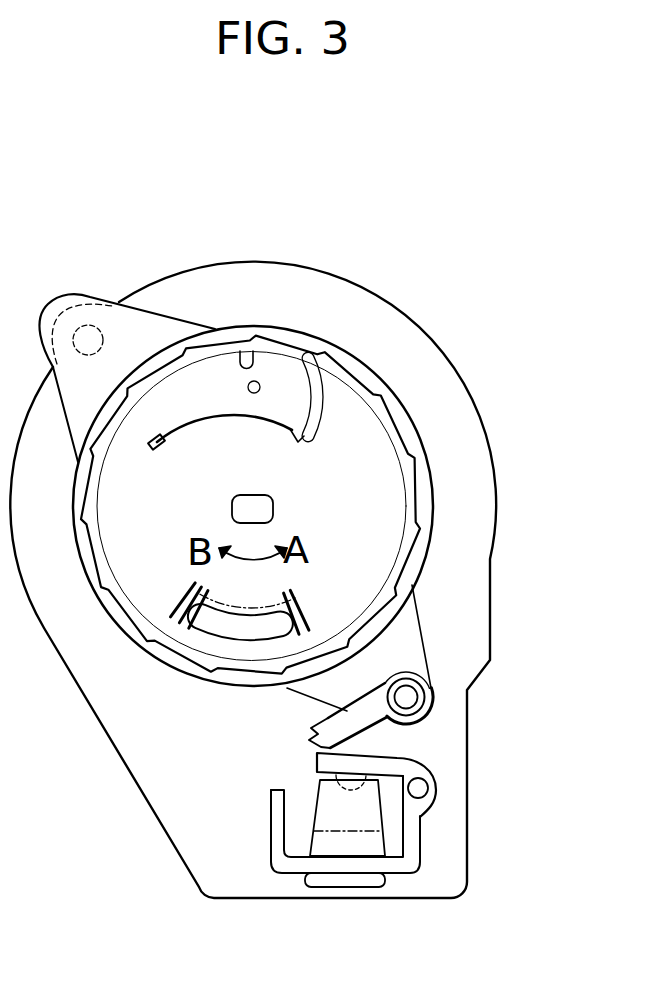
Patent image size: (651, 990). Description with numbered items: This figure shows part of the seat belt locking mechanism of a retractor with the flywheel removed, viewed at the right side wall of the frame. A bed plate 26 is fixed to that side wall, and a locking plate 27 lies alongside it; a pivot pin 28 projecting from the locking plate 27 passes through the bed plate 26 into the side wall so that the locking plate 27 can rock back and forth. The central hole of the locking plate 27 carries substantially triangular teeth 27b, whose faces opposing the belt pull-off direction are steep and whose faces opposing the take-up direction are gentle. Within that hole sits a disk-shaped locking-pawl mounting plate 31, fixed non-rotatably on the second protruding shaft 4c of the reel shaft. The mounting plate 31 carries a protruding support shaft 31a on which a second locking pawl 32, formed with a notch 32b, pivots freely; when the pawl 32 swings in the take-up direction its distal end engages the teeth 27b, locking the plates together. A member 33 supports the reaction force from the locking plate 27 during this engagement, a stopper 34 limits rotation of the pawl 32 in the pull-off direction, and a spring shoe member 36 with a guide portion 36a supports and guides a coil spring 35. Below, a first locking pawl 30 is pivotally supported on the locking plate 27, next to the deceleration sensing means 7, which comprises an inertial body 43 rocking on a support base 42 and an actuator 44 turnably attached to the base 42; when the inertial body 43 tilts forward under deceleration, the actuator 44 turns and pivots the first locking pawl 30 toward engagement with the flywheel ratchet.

The bed plate 26 is at (397, 320).
The locking plate 27 is at (105, 310).
The pivot pin 28 is at (65, 318).
The teeth 27b is at (108, 597).
The locking-pawl mounting plate 31 is at (390, 508).
The protruding support shaft 31a is at (254, 393).
The second locking pawl 32 is at (216, 397).
The notch 32b is at (246, 358).
The member 33 is at (318, 412).
The stopper 34 is at (163, 450).
The second protruding shaft 4c is at (273, 508).
The coil spring 35 is at (313, 602).
The spring shoe member 36 is at (178, 598).
The guide portion 36a is at (242, 630).
The first locking pawl 30 is at (330, 719).
The actuator 44 is at (402, 756).
The inertial body 43 is at (320, 793).
The support base 42 is at (398, 866).
The deceleration sensing means 7 is at (432, 827).